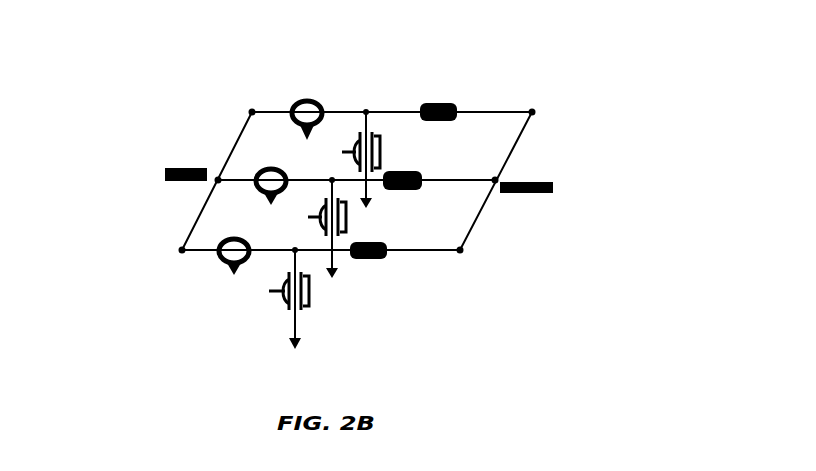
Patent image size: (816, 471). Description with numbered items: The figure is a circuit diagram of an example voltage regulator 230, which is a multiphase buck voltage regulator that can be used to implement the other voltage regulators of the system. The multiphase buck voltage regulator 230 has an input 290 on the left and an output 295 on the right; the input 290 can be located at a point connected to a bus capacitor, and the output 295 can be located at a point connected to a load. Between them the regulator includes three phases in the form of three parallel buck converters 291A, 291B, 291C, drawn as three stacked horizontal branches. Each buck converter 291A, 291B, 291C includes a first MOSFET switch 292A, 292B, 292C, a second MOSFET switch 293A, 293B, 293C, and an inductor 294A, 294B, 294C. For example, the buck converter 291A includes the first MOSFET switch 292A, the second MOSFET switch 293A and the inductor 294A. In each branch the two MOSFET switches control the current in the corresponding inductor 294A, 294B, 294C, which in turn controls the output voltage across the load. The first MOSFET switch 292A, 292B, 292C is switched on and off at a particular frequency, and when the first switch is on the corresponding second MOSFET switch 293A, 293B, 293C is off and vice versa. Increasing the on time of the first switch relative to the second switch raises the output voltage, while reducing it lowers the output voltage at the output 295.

The voltage regulator 230 is at (103, 78).
The input 290 is at (140, 180).
The buck converter 291A is at (240, 108).
The buck converter 291B is at (195, 165).
The buck converter 291C is at (172, 253).
The first MOSFET switch 292A is at (270, 92).
The first MOSFET switch 292B is at (255, 160).
The first MOSFET switch 292C is at (205, 268).
The second MOSFET switch 293A is at (382, 132).
The second MOSFET switch 293B is at (357, 228).
The second MOSFET switch 293C is at (322, 312).
The inductor 294A is at (475, 95).
The inductor 294B is at (432, 167).
The inductor 294C is at (395, 263).
The output 295 is at (572, 187).